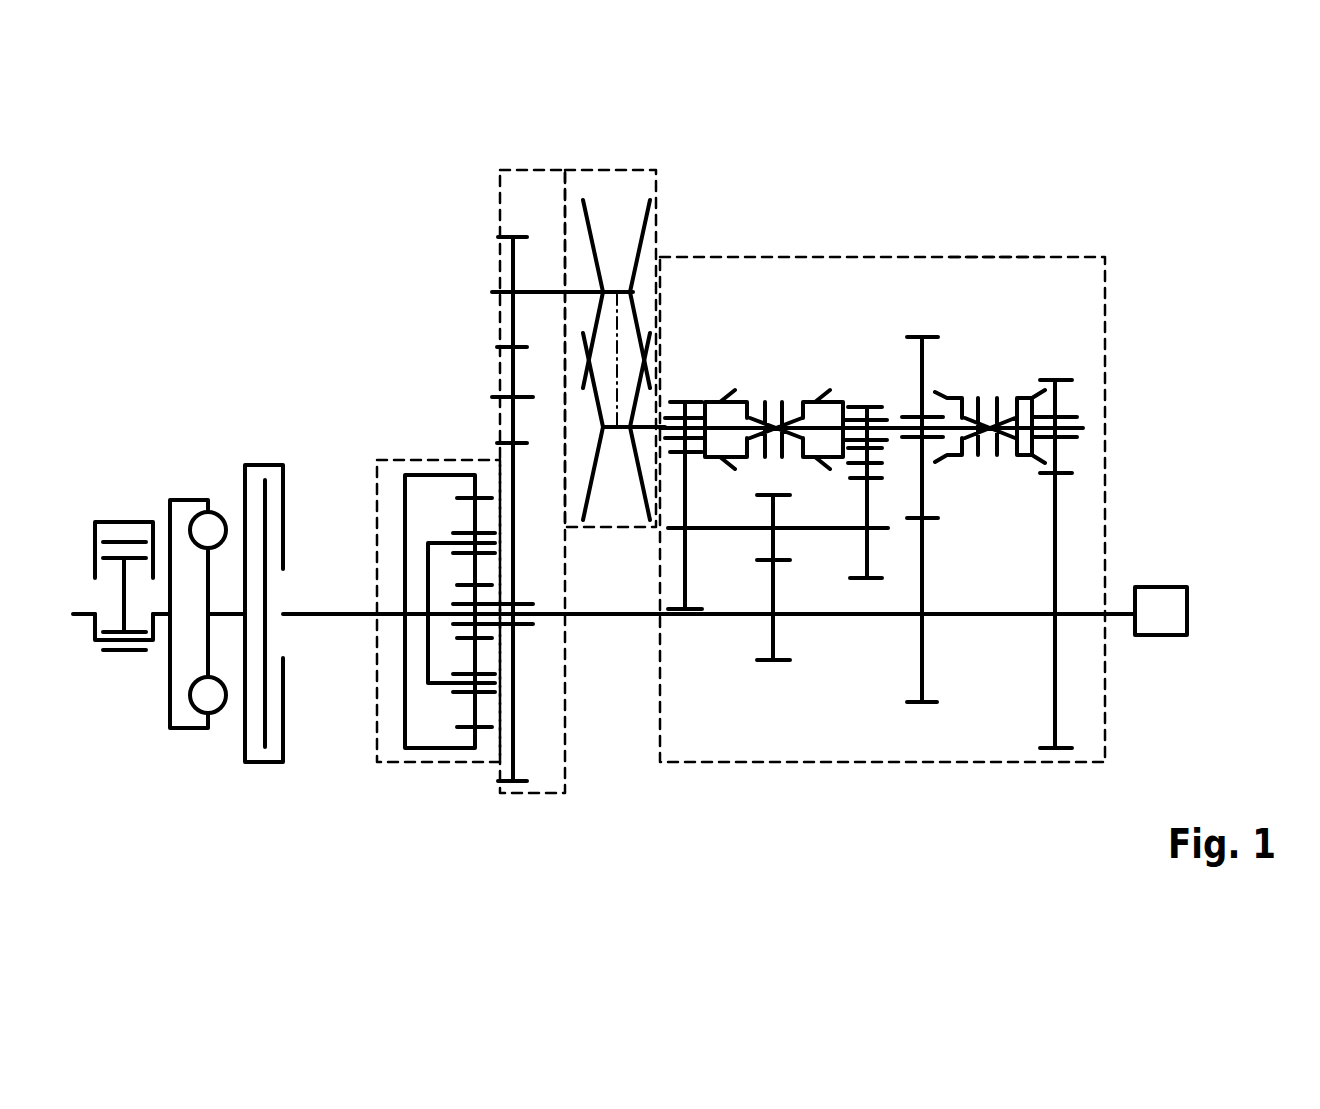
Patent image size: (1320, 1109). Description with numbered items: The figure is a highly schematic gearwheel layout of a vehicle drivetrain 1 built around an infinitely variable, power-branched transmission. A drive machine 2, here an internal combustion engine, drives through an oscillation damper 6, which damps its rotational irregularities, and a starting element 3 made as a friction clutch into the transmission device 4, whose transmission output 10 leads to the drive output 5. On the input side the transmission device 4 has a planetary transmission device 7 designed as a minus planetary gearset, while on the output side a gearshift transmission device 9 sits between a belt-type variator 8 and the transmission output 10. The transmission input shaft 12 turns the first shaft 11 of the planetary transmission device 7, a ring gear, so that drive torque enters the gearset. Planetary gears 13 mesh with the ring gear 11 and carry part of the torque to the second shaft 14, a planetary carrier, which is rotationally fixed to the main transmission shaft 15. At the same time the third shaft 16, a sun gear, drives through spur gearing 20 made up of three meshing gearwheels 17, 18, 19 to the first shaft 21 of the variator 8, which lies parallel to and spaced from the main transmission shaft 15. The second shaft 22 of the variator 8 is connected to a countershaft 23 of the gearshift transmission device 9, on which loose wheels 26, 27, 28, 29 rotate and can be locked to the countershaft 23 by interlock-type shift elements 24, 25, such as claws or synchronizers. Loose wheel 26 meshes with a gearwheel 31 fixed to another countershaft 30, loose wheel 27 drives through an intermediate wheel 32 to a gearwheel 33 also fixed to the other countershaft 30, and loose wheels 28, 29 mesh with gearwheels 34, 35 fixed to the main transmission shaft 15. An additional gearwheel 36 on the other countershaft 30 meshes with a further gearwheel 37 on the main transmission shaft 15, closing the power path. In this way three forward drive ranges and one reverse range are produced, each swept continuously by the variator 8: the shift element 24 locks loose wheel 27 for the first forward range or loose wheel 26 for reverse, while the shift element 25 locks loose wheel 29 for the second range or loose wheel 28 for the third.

The vehicle drivetrain 1 is at (279, 246).
The drive machine 2 is at (116, 495).
The starting element 3 is at (240, 446).
The transmission device 4 is at (696, 182).
The drive output 5 is at (1158, 612).
The oscillation damper 6 is at (181, 467).
The planetary transmission device 7 is at (421, 450).
The variator 8 is at (602, 182).
The gearshift transmission device 9 is at (992, 245).
The transmission output 10 is at (1113, 612).
The first shaft of the planetary transmission device 11 is at (400, 493).
The transmission input shaft 12 is at (330, 616).
The planetary gears 13 is at (473, 712).
The second shaft of the planetary transmission device 14 is at (440, 683).
The main transmission shaft 15 is at (607, 618).
The third shaft of the planetary transmission device 16 is at (467, 598).
The gearwheel 17 is at (513, 703).
The gearwheel 18 is at (517, 373).
The gearwheel 19 is at (507, 262).
The spur gearing 20 is at (485, 268).
The first shaft of the variator 21 is at (587, 300).
The second shaft of the variator 22 is at (657, 400).
The countershaft 23 is at (893, 412).
The shift element 24 is at (772, 383).
The shift element 25 is at (993, 382).
The loose wheel 26 is at (690, 403).
The loose wheel 27 is at (862, 400).
The loose wheel 28 is at (897, 412).
The loose wheel 29 is at (1056, 380).
The other countershaft 30 is at (827, 530).
The gearwheel 31 is at (697, 616).
The third gear fixed wheel 32 is at (890, 465).
The gearwheel 33 is at (867, 580).
The gearwheel 34 is at (937, 704).
The gearwheel 35 is at (1040, 748).
The additional gearwheel 36 is at (713, 616).
The further gearwheel 37 is at (772, 661).